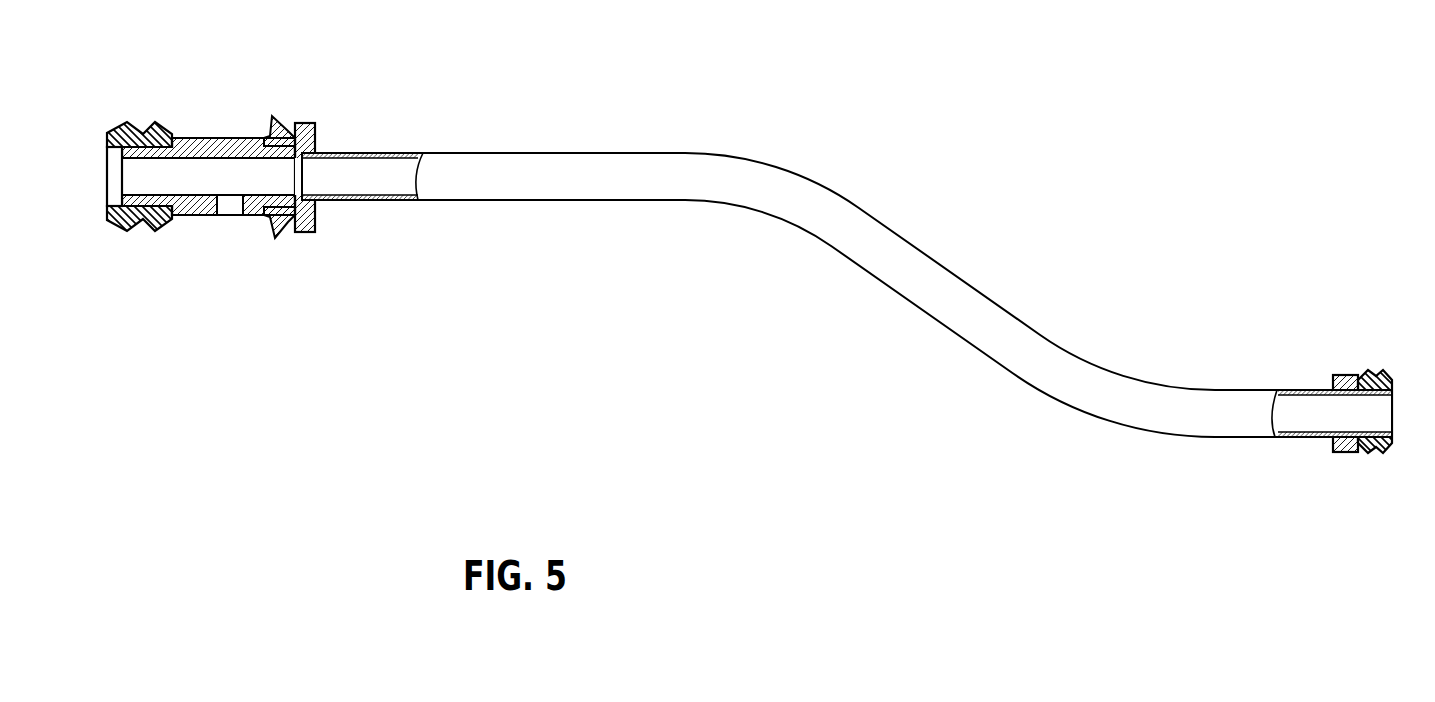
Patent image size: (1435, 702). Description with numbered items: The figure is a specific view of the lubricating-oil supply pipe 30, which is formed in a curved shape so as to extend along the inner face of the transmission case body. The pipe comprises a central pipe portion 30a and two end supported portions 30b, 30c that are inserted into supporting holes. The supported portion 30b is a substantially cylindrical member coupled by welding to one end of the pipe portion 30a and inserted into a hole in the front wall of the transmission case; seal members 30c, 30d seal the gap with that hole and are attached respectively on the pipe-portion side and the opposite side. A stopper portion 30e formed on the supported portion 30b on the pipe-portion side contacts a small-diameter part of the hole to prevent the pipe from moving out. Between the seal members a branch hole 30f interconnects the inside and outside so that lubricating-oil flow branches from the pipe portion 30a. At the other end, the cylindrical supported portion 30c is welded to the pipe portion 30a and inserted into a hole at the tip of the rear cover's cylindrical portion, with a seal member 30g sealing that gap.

The lubricating-oil supply pipe 30 is at (768, 242).
The pipe portion 30a is at (840, 238).
The supported portion 30b is at (242, 122).
The supported portion / seal member 30c is at (160, 127).
The seal member 30d is at (288, 236).
The stopper portion 30e is at (317, 127).
The branch hole 30f is at (233, 206).
The seal member 30g is at (1385, 372).